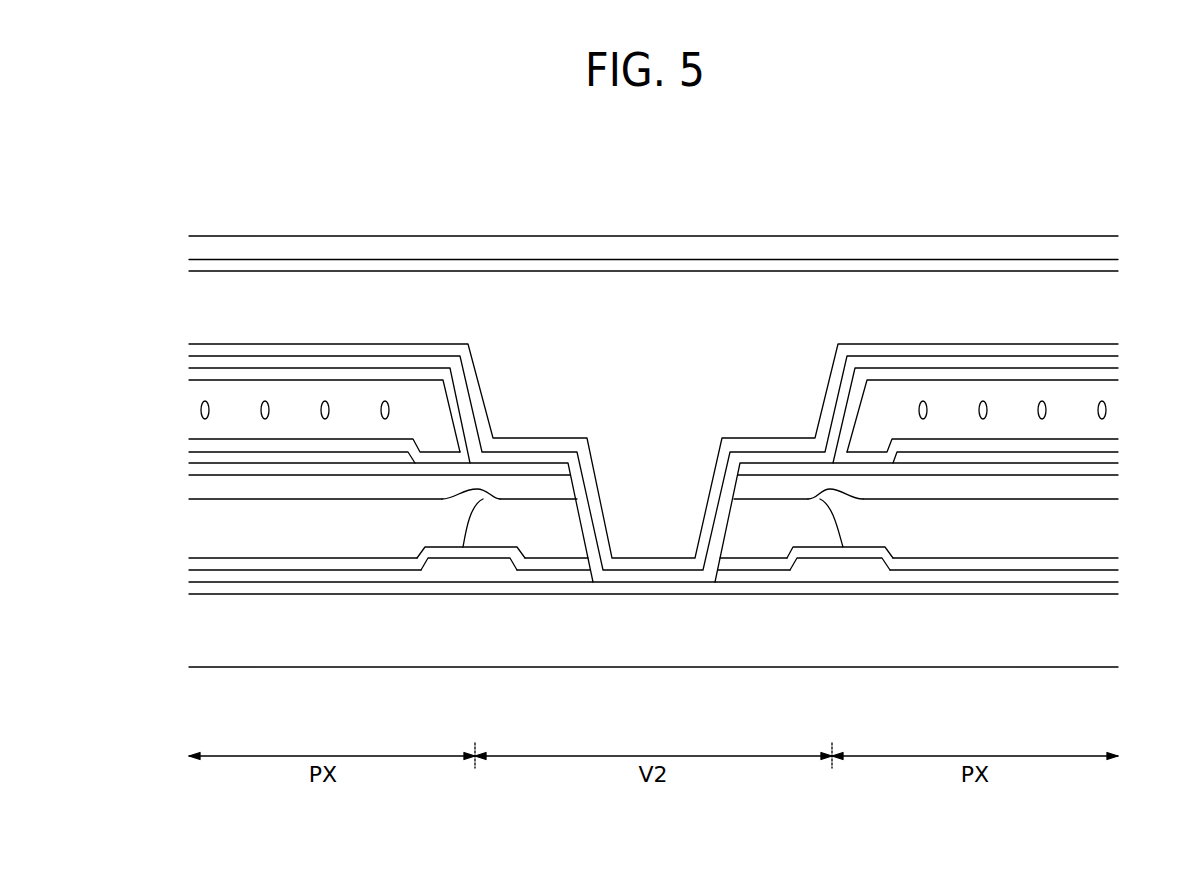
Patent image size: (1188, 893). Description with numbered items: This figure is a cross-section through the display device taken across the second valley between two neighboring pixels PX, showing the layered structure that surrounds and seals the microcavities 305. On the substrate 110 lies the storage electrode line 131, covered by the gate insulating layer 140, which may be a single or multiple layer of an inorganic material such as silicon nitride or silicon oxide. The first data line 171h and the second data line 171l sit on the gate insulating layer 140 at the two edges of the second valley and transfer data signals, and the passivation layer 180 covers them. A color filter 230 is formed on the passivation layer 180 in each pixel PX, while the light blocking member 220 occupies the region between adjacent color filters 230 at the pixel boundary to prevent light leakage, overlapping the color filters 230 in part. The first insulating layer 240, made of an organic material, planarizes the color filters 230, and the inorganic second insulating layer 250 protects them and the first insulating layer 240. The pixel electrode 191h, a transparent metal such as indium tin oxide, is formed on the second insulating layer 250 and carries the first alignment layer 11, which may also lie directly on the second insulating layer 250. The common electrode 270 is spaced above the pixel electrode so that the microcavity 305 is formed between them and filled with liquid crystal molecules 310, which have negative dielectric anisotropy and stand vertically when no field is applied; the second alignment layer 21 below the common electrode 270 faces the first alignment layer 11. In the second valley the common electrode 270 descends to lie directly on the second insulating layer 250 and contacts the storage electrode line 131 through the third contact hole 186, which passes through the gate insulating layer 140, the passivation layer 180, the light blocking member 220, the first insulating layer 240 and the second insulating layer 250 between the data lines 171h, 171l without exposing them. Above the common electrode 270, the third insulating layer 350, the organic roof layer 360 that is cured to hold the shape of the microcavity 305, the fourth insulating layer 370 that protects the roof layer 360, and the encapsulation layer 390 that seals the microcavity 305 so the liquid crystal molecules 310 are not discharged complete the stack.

The second alignment layer 21 is at (212, 375).
The microcavity 305 is at (310, 410).
The common electrode 270 is at (352, 365).
The third insulating layer 350 is at (416, 345).
The roof layer 360 is at (543, 302).
The third contact hole 186 is at (583, 522).
The fourth insulating layer 370 is at (912, 265).
The encapsulation layer 390 is at (1017, 248).
The liquid crystal molecules 310 is at (198, 410).
The pixel electrode 191h is at (250, 455).
The first alignment layer 11 is at (303, 443).
The color filter 230 is at (362, 537).
The second data line 171l is at (465, 565).
The light blocking member 220 is at (547, 540).
The substrate 110 is at (617, 648).
The storage electrode line 131 is at (683, 583).
The first data line 171h is at (835, 563).
The gate insulating layer 140 is at (890, 575).
The passivation layer 180 is at (943, 563).
The first insulating layer 240 is at (993, 487).
The second insulating layer 250 is at (1085, 468).